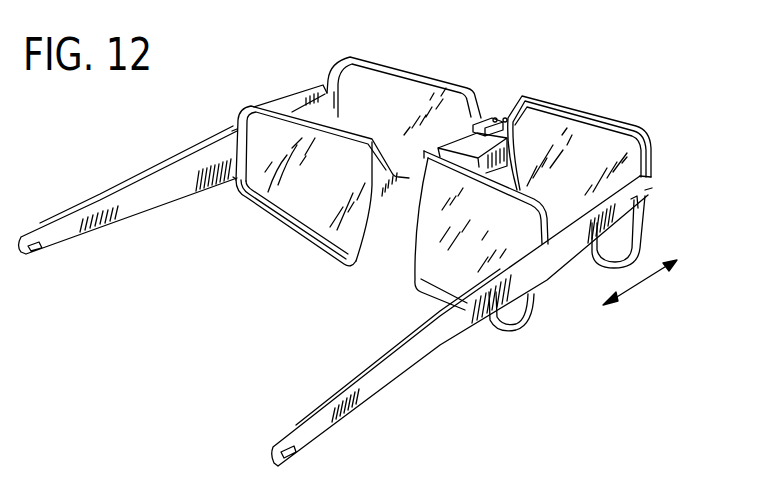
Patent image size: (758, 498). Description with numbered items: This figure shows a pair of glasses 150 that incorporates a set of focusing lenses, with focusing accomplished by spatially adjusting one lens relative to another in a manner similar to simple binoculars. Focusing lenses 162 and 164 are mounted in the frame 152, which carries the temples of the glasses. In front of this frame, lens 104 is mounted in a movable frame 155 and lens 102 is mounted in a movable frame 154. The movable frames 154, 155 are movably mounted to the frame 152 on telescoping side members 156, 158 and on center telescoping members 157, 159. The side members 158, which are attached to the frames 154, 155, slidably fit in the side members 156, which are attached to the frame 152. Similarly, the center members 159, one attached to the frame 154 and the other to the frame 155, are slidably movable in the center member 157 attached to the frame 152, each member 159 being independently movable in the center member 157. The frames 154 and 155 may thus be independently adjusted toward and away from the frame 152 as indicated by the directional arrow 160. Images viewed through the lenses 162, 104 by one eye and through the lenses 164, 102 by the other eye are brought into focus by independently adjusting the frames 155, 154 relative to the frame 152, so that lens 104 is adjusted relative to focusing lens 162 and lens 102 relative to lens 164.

The pair of glasses 150 is at (170, 158).
The frame 152 is at (266, 99).
The focusing lens 162 is at (303, 203).
The focusing lens 164 is at (417, 290).
The telescoping side member 156 is at (305, 87).
The movable frame 155 is at (378, 58).
The lens 104 is at (426, 100).
The center telescoping member 157 is at (456, 152).
The center telescoping member 159 is at (497, 114).
The movable frame 154 is at (636, 124).
The lens 102 is at (577, 156).
The telescoping side member 158 is at (637, 202).
The directional arrow 160 is at (645, 285).